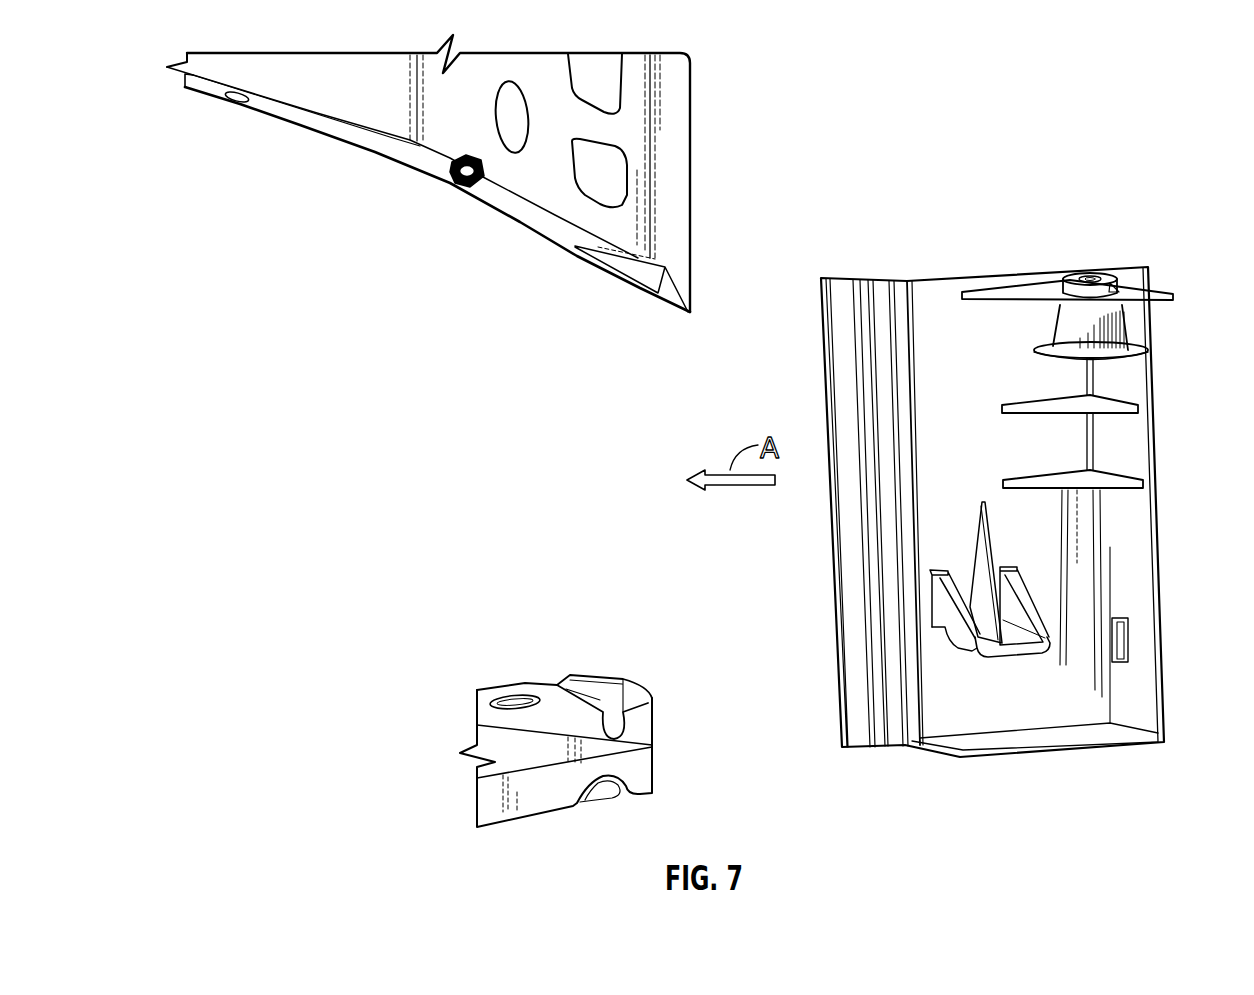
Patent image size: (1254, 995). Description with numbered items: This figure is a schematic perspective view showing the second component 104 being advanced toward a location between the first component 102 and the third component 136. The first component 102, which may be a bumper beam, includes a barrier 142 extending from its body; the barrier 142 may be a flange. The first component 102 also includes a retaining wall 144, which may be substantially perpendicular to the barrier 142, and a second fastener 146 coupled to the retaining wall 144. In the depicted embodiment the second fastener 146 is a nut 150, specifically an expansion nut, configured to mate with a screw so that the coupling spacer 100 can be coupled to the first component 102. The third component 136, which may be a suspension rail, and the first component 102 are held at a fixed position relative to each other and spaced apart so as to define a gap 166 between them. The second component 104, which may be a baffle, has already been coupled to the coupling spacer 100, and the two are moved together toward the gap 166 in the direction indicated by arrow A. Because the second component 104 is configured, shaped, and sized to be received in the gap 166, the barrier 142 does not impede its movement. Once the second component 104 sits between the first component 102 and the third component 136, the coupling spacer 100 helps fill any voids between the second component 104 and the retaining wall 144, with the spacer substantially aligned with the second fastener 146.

The coupling spacer 100 is at (1127, 322).
The first component 102 is at (472, 175).
The second component 104 is at (1030, 512).
The third component 136 is at (613, 764).
The barrier 142 is at (697, 303).
The retaining wall 144 is at (317, 115).
The second fastener 146 is at (485, 180).
The nut 150 is at (460, 155).
The gap 166 is at (640, 677).